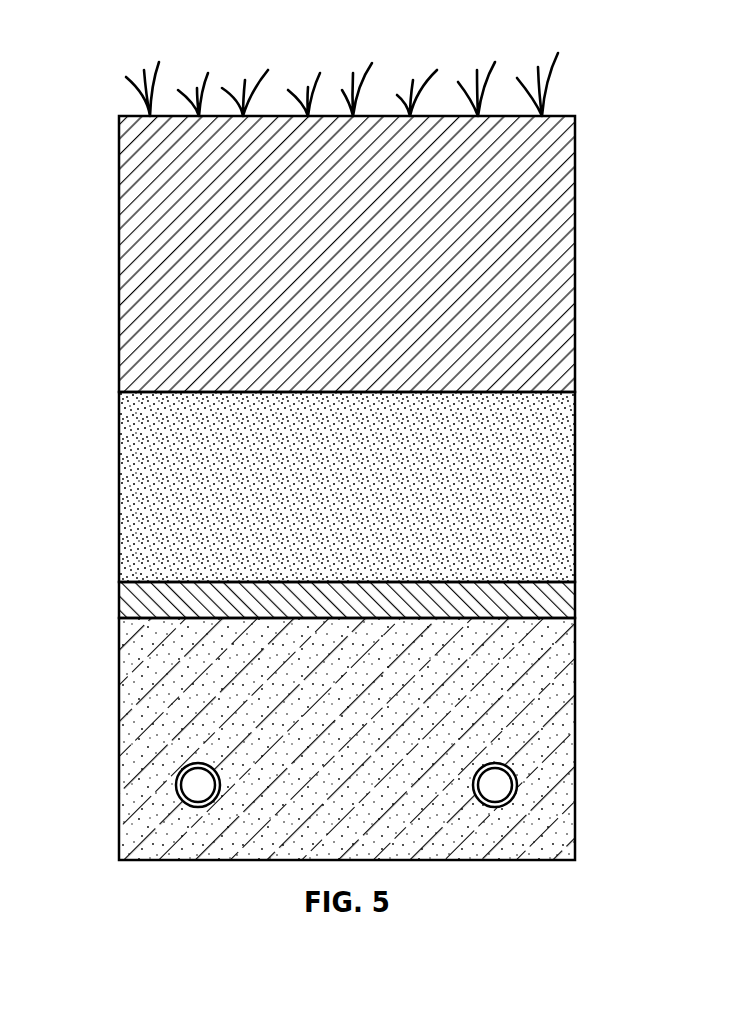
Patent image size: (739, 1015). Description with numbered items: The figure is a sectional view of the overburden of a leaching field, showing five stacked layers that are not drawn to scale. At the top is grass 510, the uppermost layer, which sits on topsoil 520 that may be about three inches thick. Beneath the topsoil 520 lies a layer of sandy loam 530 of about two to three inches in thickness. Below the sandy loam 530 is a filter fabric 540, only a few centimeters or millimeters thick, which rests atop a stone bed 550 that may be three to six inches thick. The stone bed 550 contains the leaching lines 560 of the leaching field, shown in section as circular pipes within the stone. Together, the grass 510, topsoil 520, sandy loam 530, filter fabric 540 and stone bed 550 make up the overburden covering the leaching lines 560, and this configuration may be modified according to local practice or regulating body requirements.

The grass 510 is at (124, 71).
The topsoil 520 is at (370, 266).
The sand / particulate layer 530 is at (370, 500).
The filter fabric 540 is at (557, 596).
The stone bed 550 is at (370, 750).
The leaching lines 560 is at (198, 785).